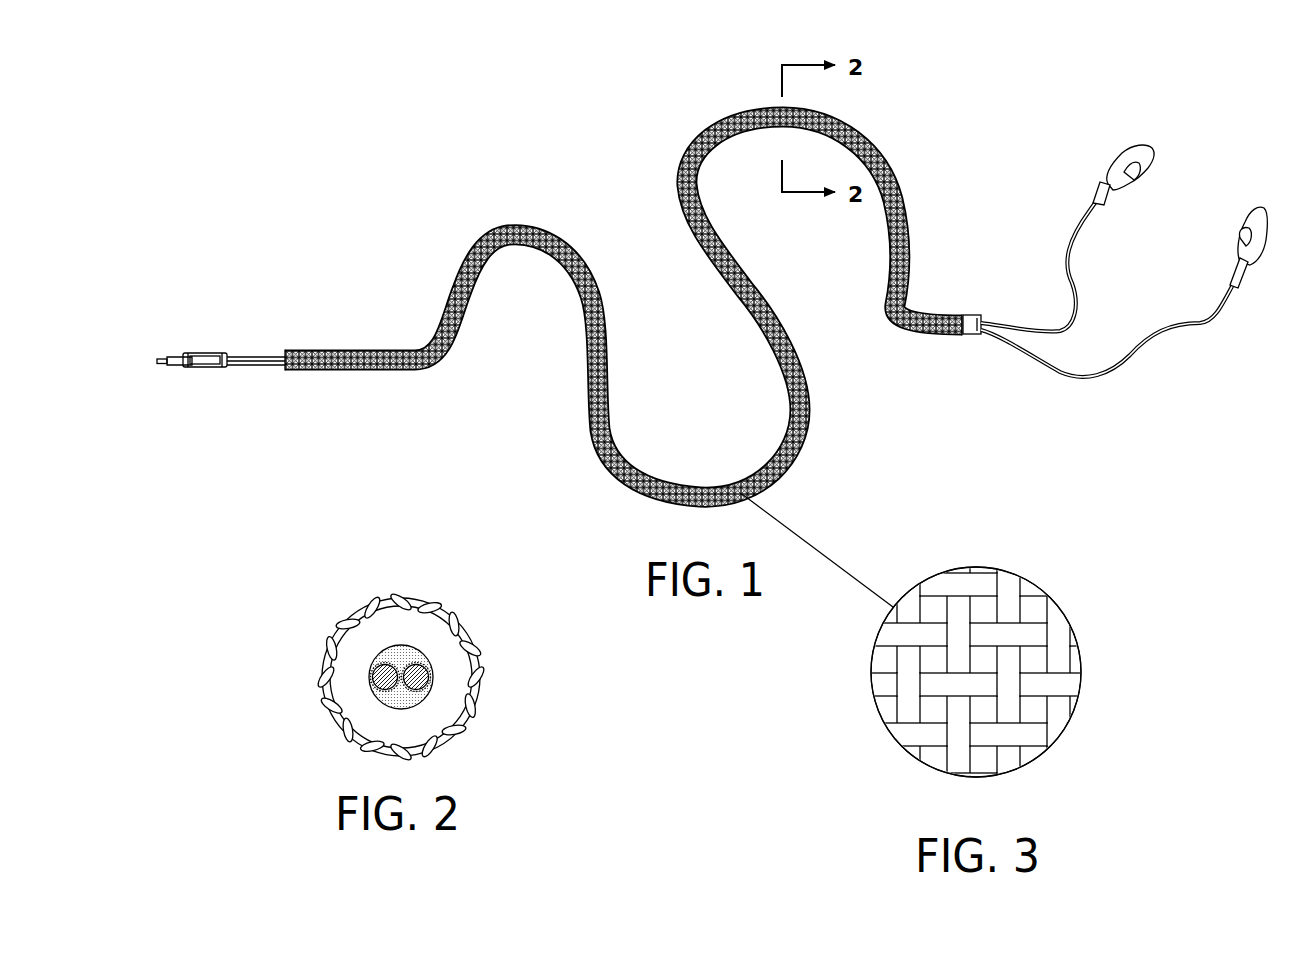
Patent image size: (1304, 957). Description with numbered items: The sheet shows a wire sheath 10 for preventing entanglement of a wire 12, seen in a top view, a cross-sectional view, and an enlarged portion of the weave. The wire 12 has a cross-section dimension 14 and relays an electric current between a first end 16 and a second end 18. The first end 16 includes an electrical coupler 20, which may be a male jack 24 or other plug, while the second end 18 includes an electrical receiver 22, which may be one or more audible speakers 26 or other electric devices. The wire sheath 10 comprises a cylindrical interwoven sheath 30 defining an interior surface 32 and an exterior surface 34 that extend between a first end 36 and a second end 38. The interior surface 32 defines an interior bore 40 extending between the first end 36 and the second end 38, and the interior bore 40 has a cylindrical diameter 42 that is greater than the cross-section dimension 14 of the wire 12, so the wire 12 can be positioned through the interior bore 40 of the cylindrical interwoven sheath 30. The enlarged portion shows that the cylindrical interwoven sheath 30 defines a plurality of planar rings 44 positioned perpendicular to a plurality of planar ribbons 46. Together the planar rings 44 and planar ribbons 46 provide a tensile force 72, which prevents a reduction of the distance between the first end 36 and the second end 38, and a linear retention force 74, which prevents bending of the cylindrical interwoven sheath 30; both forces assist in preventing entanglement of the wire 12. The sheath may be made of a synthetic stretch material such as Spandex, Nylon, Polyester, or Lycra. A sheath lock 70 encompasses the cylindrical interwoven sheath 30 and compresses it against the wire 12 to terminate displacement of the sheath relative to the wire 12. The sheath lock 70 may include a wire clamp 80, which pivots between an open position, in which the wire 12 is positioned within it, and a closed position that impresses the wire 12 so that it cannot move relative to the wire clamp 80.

In FIG. 1, the wire sheath 10 is at (600, 103).
In FIG. 2, the wire sheath 10 is at (440, 601).
In FIG. 3, the wire sheath 10 is at (992, 659).
In FIG. 1, the wire 12 is at (256, 357).
In FIG. 2, the wire 12 is at (432, 672).
In FIG. 1, the cross-section dimension 14 is at (1109, 285).
In FIG. 2, the cross-section dimension 14 is at (416, 700).
In FIG. 1, the first end 16 is at (200, 353).
In FIG. 1, the second end 18 is at (1138, 148).
In FIG. 1, the electrical coupler 20 is at (206, 368).
In FIG. 1, the electrical receiver 22 is at (1152, 168).
In FIG. 1, the male jack 24 is at (177, 365).
In FIG. 1, the audible speaker 26 is at (1110, 165).
In FIG. 1, the cylindrical interwoven sheath 30 is at (555, 230).
In FIG. 2, the cylindrical interwoven sheath 30 is at (382, 657).
In FIG. 3, the cylindrical interwoven sheath 30 is at (992, 659).
In FIG. 2, the interior surface 32 is at (336, 640).
In FIG. 1, the exterior surface 34 is at (497, 226).
In FIG. 2, the exterior surface 34 is at (350, 615).
In FIG. 1, the first end 36 is at (950, 318).
In FIG. 1, the second end 38 is at (291, 371).
In FIG. 2, the interior bore 40 is at (440, 638).
In FIG. 2, the cylindrical diameter 42 is at (455, 685).
In FIG. 3, the planar rings 44 is at (905, 601).
In FIG. 3, the planar ribbons 46 is at (1068, 685).
In FIG. 1, the sheath lock 70 is at (967, 335).
In FIG. 1, the tensile force 72 is at (893, 127).
In FIG. 1, the linear retention force 74 is at (940, 155).
In FIG. 1, the wire clamp 80 is at (970, 315).